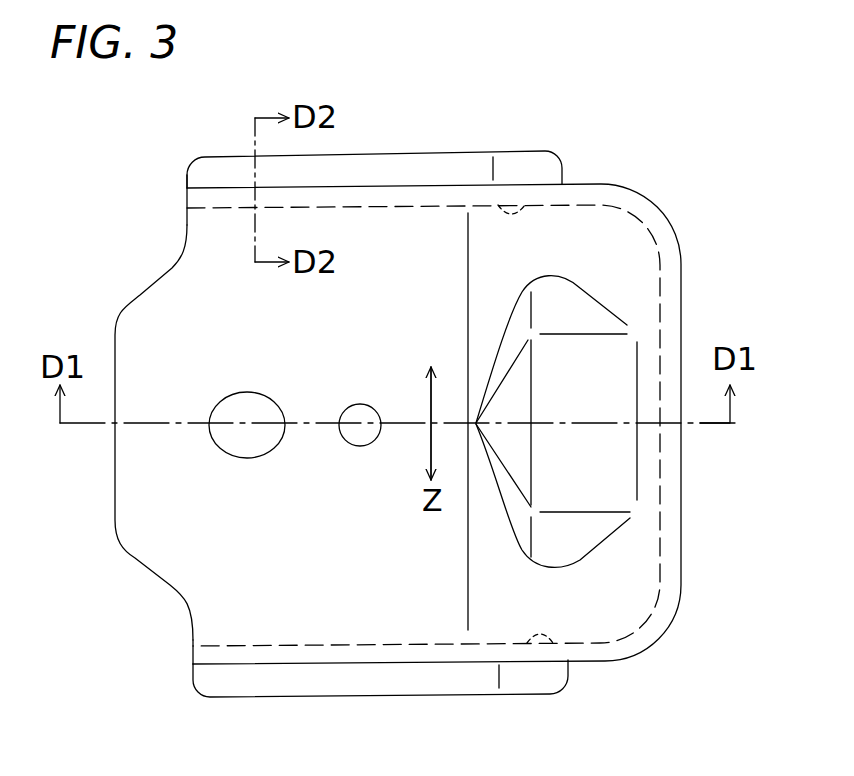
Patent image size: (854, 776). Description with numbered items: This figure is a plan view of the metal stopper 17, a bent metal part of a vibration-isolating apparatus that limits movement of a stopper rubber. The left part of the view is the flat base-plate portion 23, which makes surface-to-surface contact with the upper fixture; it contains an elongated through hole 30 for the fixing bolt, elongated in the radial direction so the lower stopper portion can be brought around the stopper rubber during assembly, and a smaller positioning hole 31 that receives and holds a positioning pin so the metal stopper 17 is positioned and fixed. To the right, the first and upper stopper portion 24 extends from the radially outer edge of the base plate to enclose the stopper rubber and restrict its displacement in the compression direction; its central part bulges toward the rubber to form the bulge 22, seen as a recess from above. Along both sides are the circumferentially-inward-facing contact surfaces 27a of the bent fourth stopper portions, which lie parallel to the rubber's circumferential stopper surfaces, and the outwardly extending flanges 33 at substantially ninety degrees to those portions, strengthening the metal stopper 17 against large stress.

The metal stopper 17 is at (168, 303).
The bulge 22 is at (601, 399).
The flat base-plate portion 23 is at (334, 336).
The first and upper stopper portion 24 is at (590, 215).
The circumferentially-inward-facing contact surfaces 27a is at (517, 200).
The elongated through hole 30 is at (265, 447).
The positioning hole 31 is at (352, 435).
The outwardly extending flanges 33 is at (371, 170).